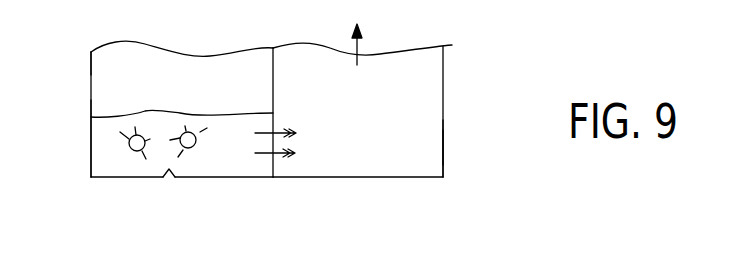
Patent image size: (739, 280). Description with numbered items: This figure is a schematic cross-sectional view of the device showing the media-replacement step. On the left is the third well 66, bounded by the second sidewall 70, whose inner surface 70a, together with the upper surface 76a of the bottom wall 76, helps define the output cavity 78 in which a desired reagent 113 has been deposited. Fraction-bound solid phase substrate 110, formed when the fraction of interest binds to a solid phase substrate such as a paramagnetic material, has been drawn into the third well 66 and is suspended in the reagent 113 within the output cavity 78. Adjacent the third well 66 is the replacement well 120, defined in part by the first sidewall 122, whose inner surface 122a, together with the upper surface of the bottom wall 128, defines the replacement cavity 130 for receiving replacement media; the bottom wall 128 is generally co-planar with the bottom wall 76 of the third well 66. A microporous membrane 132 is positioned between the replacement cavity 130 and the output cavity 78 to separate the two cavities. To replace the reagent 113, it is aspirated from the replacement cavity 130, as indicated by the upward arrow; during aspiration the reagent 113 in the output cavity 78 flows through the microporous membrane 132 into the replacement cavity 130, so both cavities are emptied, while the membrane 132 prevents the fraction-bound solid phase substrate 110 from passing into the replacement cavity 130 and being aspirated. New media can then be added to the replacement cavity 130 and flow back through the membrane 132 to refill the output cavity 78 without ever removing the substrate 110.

The third well 66 is at (91, 177).
The second sidewall 70 is at (91, 83).
The inner surface of second sidewall 70a is at (91, 74).
The bottom wall 76 is at (135, 178).
The upper surface of bottom wall 76a is at (173, 180).
The output cavity 78 is at (157, 85).
The fraction-bound solid phase substrate 110 is at (129, 147).
The reagent 113 is at (158, 110).
The replacement well 120 is at (443, 177).
The first sidewall 122 is at (443, 85).
The inner surface of first sidewall 122a is at (443, 159).
The bottom wall 128 is at (368, 178).
The replacement cavity 130 is at (378, 131).
The microporous membrane 132 is at (273, 84).